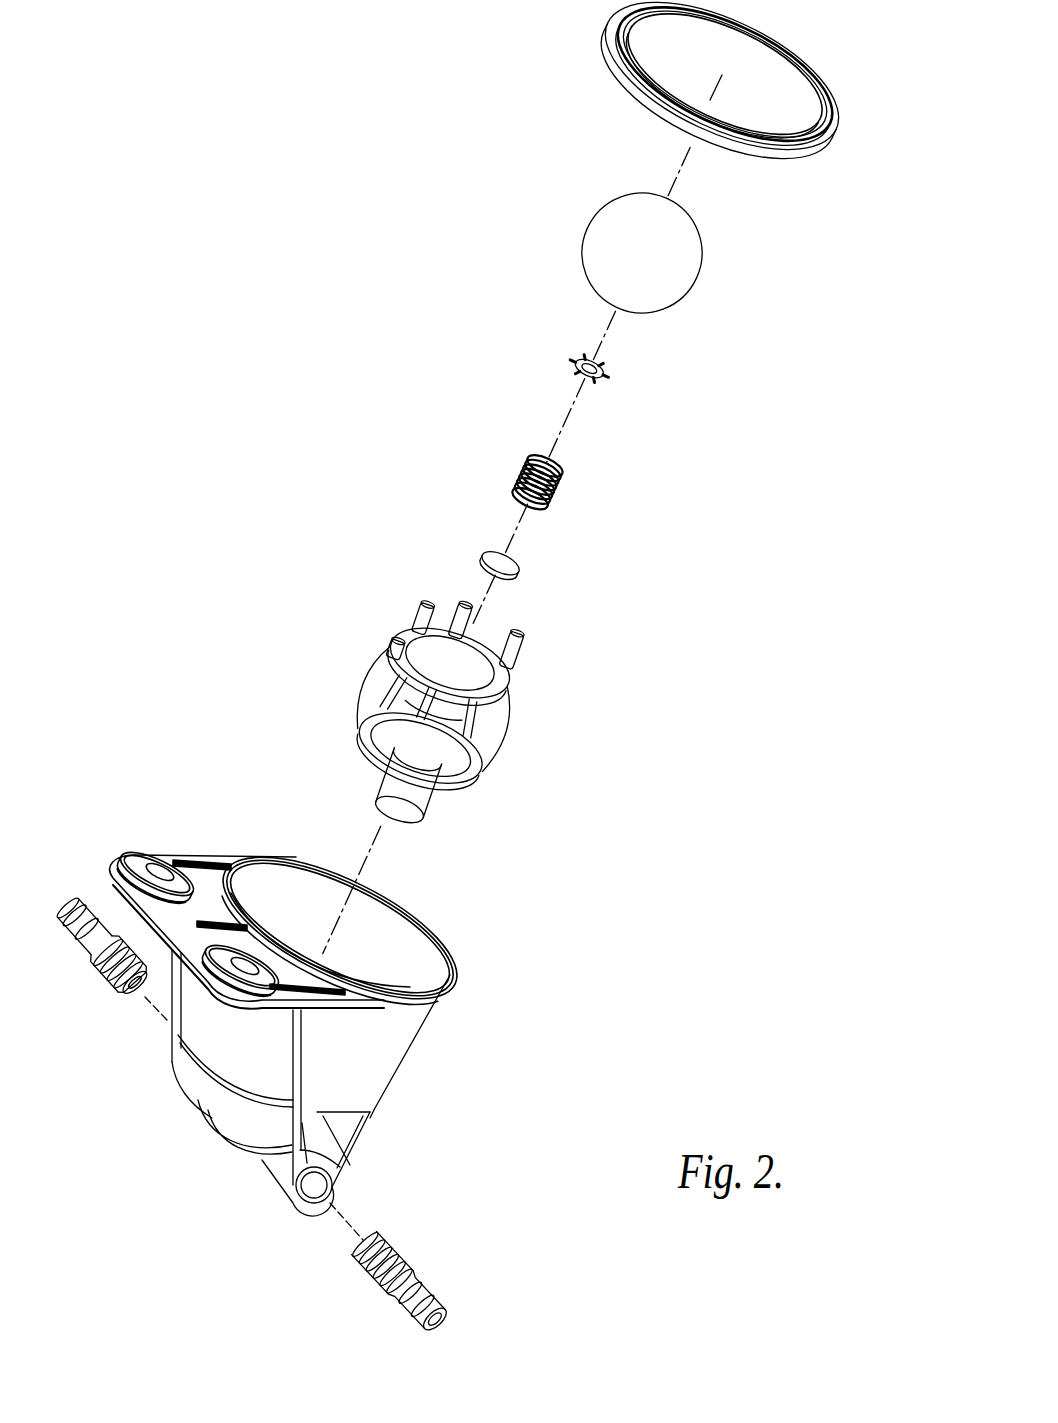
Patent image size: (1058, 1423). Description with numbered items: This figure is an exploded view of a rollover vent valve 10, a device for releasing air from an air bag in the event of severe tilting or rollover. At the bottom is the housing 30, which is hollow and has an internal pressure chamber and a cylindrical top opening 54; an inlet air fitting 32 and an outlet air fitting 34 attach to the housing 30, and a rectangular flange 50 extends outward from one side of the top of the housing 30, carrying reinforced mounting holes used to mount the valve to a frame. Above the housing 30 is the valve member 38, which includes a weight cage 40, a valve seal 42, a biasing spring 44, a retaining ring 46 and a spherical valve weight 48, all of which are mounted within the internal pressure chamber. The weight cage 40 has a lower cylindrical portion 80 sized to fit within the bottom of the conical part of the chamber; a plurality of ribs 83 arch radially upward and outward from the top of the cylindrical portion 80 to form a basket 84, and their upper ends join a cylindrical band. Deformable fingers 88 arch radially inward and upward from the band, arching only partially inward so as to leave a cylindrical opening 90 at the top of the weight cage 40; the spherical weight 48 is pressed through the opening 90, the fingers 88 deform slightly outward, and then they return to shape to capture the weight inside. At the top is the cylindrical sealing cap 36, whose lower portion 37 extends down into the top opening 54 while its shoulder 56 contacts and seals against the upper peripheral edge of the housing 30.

The rollover vent valve 10 is at (262, 553).
The housing 30 is at (295, 1001).
The inlet air fitting 32 is at (368, 1272).
The outlet air fitting 34 is at (78, 903).
The sealing cap 36 is at (719, 131).
The lower portion of the sealing cap 37 is at (794, 166).
The valve member 38 is at (544, 387).
The weight cage 40 is at (402, 701).
The valve seal 42 is at (500, 566).
The biasing spring 44 is at (537, 482).
The retaining ring 46 is at (589, 368).
The spherical valve weight 48 is at (642, 253).
The rectangular flange 50 is at (308, 919).
The top opening 54 is at (296, 915).
The shoulder 56 is at (608, 47).
The lower cylindrical portion 80 is at (406, 788).
The ribs 83 is at (419, 751).
The basket 84 is at (434, 708).
The deformable fingers 88 is at (457, 639).
The cylindrical opening 90 is at (453, 651).